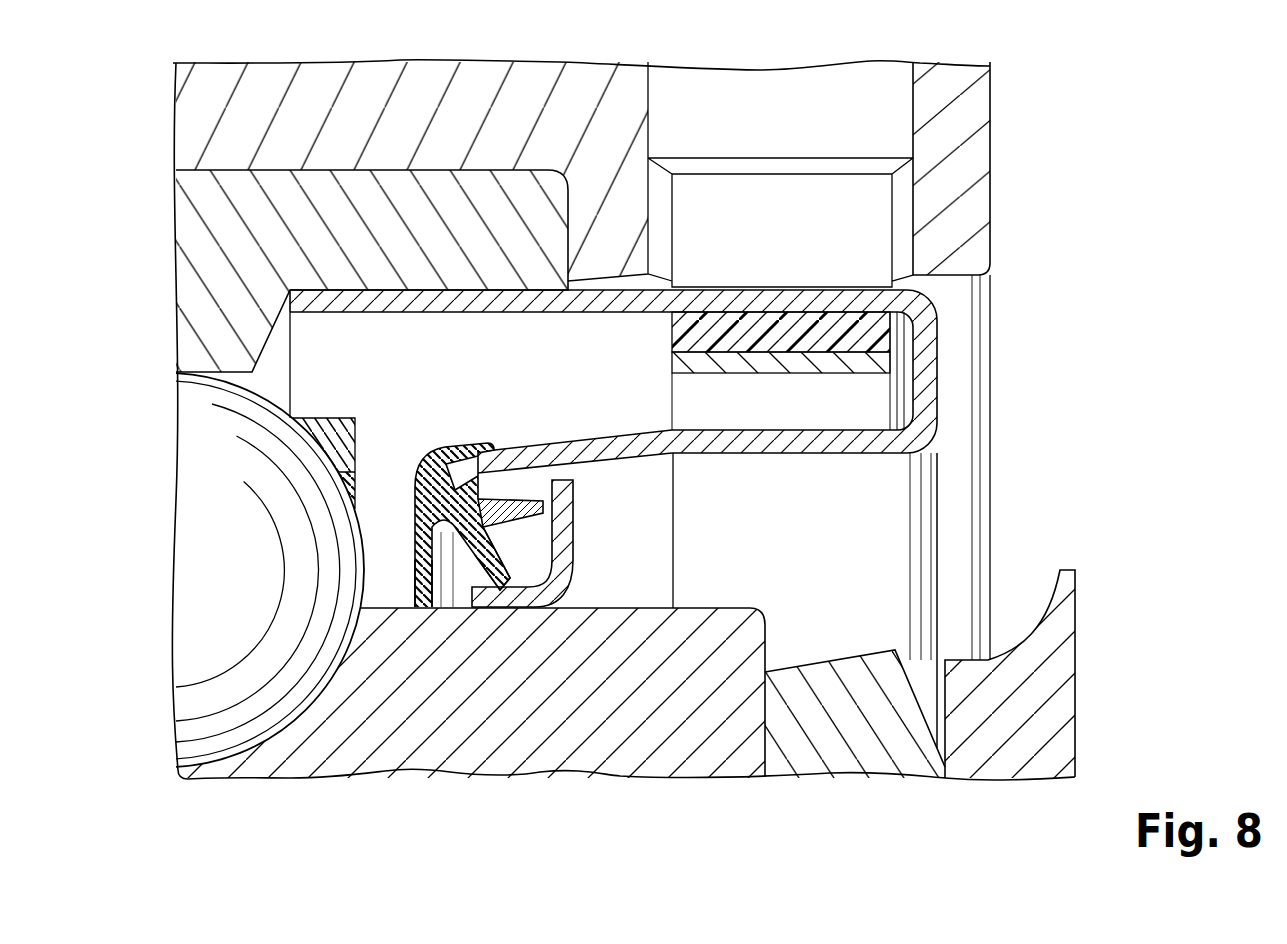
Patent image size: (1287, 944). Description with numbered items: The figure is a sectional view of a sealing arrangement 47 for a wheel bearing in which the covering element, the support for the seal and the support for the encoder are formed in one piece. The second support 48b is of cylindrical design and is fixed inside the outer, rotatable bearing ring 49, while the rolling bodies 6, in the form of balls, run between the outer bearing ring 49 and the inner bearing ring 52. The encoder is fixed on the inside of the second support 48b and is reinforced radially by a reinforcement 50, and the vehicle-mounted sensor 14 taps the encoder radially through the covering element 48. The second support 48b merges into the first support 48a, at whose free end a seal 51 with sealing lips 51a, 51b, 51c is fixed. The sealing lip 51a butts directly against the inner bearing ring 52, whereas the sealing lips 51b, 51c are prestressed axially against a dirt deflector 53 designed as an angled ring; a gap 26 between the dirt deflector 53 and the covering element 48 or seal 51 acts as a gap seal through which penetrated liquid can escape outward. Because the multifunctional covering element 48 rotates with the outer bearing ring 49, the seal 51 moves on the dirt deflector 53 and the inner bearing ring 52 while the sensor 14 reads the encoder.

The rolling bodies 6 is at (205, 550).
The sensor 14 is at (778, 195).
The gap 26 is at (578, 483).
The sealing arrangement 47 is at (812, 546).
The covering element 48 is at (685, 381).
The first support 48a is at (566, 455).
The second support 48b is at (480, 313).
The outer bearing ring 49 is at (193, 257).
The reinforcement 50 is at (862, 367).
The seal 51 is at (519, 570).
The sealing lip 51a is at (438, 610).
The sealing lip 51b is at (503, 597).
The sealing lip 51c is at (575, 548).
The inner bearing ring 52 is at (556, 745).
The dirt deflector 53 is at (560, 514).